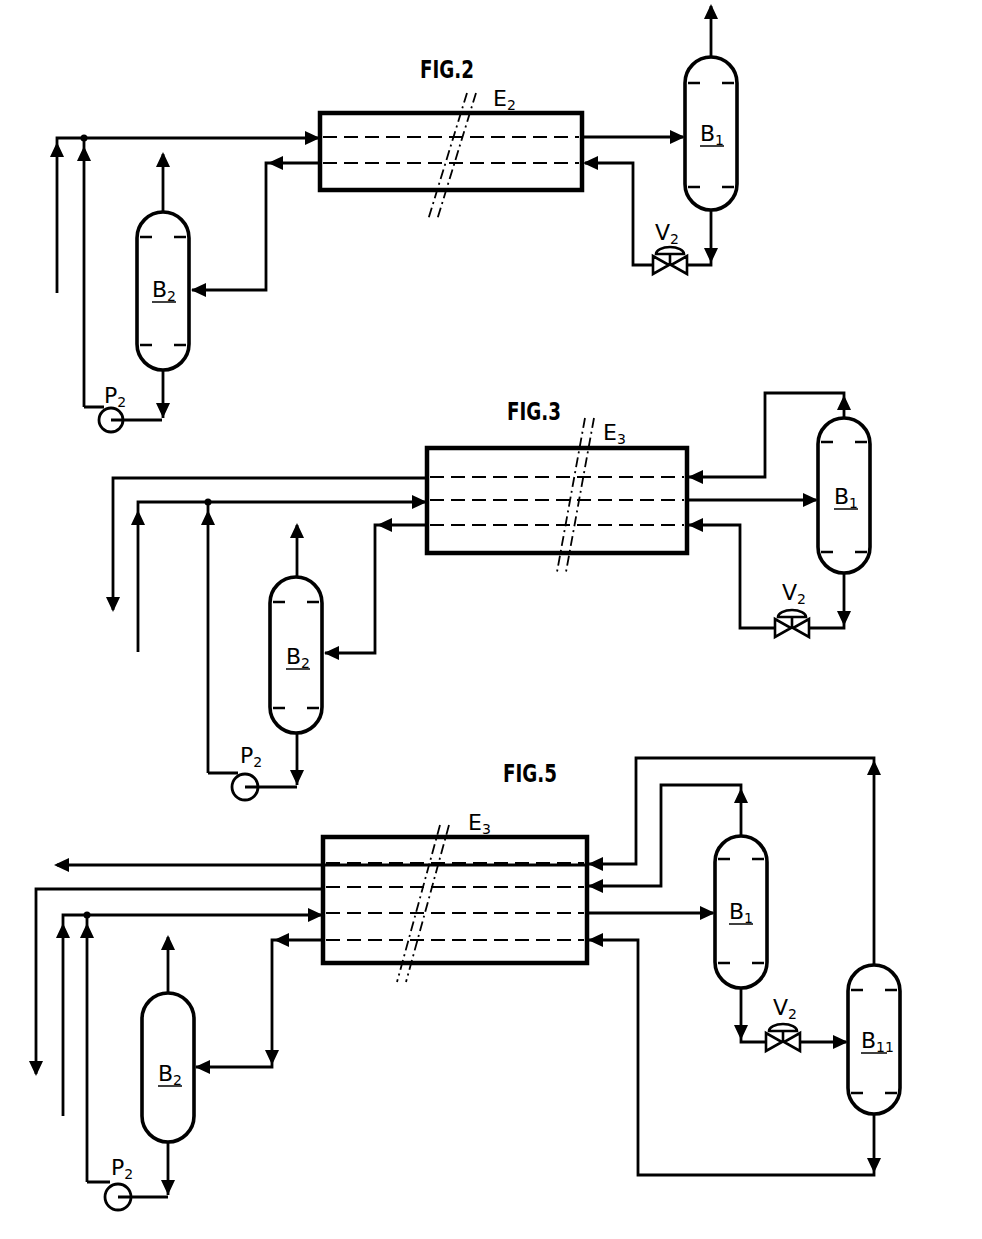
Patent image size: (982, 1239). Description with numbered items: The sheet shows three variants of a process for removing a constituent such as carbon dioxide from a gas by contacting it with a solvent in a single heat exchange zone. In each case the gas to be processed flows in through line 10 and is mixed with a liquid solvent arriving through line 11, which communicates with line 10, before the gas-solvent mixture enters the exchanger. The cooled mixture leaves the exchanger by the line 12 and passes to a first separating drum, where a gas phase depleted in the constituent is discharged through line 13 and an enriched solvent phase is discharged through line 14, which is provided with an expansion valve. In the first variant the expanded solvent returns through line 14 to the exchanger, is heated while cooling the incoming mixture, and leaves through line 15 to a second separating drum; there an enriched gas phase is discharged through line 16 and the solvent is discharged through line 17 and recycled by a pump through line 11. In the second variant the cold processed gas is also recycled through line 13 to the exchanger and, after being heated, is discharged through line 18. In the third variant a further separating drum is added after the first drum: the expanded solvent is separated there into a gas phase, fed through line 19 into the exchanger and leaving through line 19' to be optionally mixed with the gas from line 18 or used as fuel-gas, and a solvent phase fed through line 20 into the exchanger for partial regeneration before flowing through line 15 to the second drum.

In FIG. 2, the gas feed line 10 is at (55, 200).
In FIG. 3, the gas feed line 10 is at (138, 626).
In FIG. 5, the gas feed line 10 is at (63, 1103).
In FIG. 2, the solvent line 11 is at (84, 304).
In FIG. 3, the solvent line 11 is at (208, 643).
In FIG. 5, the solvent line 11 is at (87, 1152).
In FIG. 2, the line from heat exchanger to separator B1 12 is at (648, 133).
In FIG. 3, the line from heat exchanger to separator B1 12 is at (778, 501).
In FIG. 5, the line from heat exchanger to separator B1 12 is at (688, 914).
In FIG. 2, the gas phase discharge line 13 is at (711, 26).
In FIG. 3, the gas phase discharge line 13 is at (765, 405).
In FIG. 5, the gas phase discharge line 13 is at (742, 813).
In FIG. 2, the solvent phase discharge line 14 is at (633, 218).
In FIG. 3, the solvent phase discharge line 14 is at (740, 597).
In FIG. 5, the solvent phase discharge line 14 is at (826, 1043).
In FIG. 2, the heated solvent discharge line 15 is at (267, 236).
In FIG. 3, the heated solvent discharge line 15 is at (375, 608).
In FIG. 5, the heated solvent discharge line 15 is at (273, 1017).
In FIG. 2, the enriched gas discharge line 16 is at (164, 178).
In FIG. 3, the enriched gas discharge line 16 is at (298, 548).
In FIG. 5, the enriched gas discharge line 16 is at (168, 968).
In FIG. 2, the solvent discharge line 17 is at (165, 380).
In FIG. 3, the solvent discharge line 17 is at (298, 757).
In FIG. 5, the solvent discharge line 17 is at (169, 1166).
In FIG. 3, the processed gas discharge line 18 is at (113, 527).
In FIG. 5, the processed gas discharge line 18 is at (46, 889).
In FIG. 5, the drum B11 gas phase line 19 is at (734, 861).
In FIG. 5, the exchanger gas outlet line 19' is at (320, 843).
In FIG. 5, the drum B11 solvent phase line 20 is at (640, 1100).